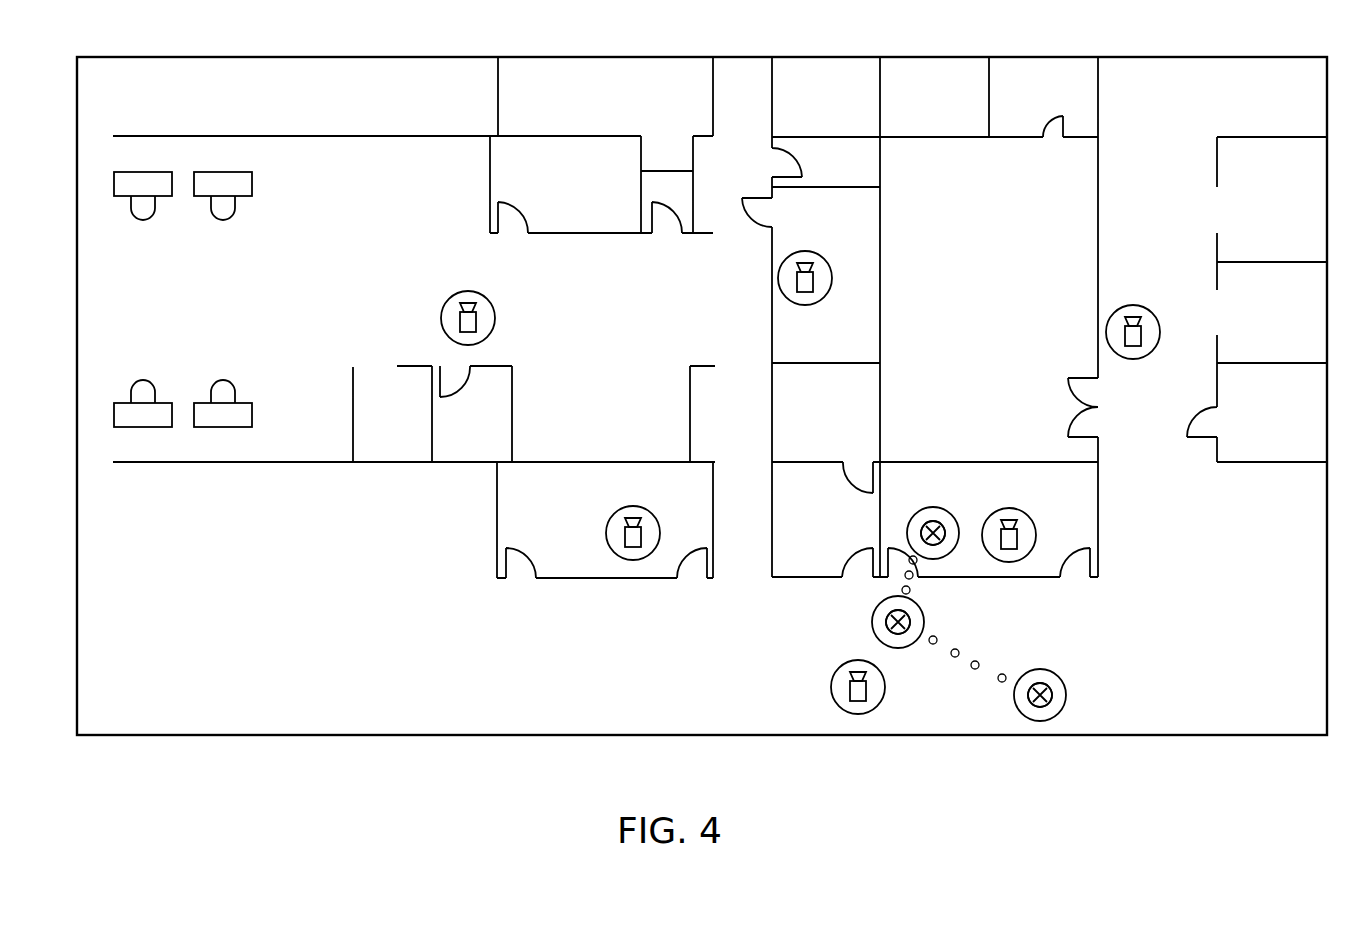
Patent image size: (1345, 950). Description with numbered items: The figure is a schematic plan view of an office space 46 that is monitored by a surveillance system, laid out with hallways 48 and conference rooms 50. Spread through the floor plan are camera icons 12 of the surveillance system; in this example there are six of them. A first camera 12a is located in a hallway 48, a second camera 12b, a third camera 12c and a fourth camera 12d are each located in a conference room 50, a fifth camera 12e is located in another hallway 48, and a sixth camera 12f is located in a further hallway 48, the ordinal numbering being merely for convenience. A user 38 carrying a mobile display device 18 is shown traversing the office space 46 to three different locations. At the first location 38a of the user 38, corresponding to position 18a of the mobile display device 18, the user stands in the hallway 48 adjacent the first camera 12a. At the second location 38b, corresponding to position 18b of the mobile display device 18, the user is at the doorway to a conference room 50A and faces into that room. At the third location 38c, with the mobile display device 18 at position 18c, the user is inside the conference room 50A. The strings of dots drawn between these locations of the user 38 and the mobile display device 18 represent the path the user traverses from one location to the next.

The office space 46 is at (702, 374).
The hallway 48 is at (1177, 228).
The conference room 50 is at (588, 203).
The conference room 50A is at (1055, 491).
The camera 12 is at (791, 476).
The first camera 12a is at (845, 664).
The second camera 12b is at (805, 252).
The third camera 12c is at (625, 508).
The fourth camera 12d is at (1000, 511).
The fifth camera 12e is at (453, 298).
The sixth camera 12f is at (1140, 307).
The mobile display device 18 is at (976, 637).
The first location of the mobile display device 18a is at (1086, 715).
The second location of the mobile display device 18b is at (884, 652).
The third location of the mobile display device 18c is at (941, 556).
The user 38 is at (951, 548).
The first location of the user 38a is at (1050, 720).
The second location of the user 38b is at (893, 648).
The third location of the user 38c is at (948, 552).